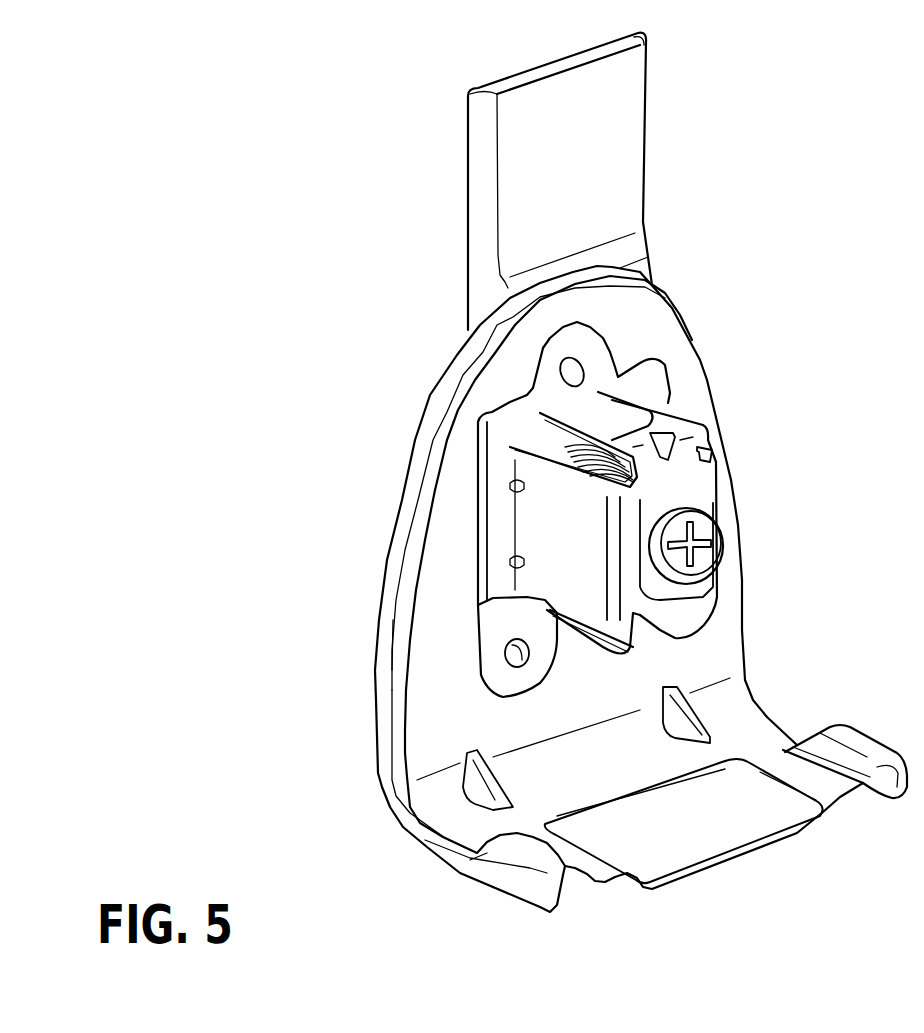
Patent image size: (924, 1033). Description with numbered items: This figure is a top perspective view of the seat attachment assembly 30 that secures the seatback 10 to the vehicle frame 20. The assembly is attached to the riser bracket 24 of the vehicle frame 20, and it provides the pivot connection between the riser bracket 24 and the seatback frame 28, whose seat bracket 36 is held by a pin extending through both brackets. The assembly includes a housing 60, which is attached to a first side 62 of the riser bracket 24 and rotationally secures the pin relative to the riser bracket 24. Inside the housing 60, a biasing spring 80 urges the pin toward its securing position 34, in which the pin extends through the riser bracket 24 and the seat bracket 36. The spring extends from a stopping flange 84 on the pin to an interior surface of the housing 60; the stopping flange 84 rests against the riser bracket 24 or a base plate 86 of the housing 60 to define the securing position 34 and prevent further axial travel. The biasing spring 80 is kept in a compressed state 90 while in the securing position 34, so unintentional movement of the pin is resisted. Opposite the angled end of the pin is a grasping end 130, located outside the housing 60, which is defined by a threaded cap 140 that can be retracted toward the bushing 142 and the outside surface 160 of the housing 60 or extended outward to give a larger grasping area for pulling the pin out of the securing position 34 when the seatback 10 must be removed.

The seatback 10 is at (338, 152).
The vehicle frame 20 is at (334, 768).
The riser bracket 24 is at (387, 682).
The seatback frame 28 is at (650, 94).
The seat attachment assembly 30 is at (683, 402).
The securing position 34 is at (752, 591).
The seat bracket 36 is at (612, 160).
The housing 60 is at (553, 582).
The first side 62 is at (493, 391).
The biasing spring 80 is at (567, 443).
The stopping flange 84 is at (604, 420).
The base plate 86 is at (574, 346).
The compressed state 90 is at (564, 473).
The grasping end 130 is at (738, 548).
The threaded cap 140 is at (688, 578).
The bushing 142 is at (660, 500).
The outside surface 160 is at (707, 484).